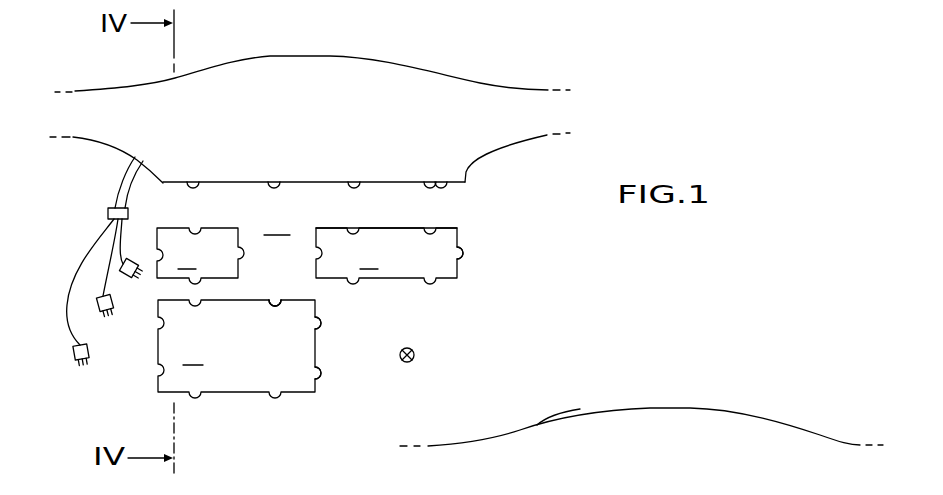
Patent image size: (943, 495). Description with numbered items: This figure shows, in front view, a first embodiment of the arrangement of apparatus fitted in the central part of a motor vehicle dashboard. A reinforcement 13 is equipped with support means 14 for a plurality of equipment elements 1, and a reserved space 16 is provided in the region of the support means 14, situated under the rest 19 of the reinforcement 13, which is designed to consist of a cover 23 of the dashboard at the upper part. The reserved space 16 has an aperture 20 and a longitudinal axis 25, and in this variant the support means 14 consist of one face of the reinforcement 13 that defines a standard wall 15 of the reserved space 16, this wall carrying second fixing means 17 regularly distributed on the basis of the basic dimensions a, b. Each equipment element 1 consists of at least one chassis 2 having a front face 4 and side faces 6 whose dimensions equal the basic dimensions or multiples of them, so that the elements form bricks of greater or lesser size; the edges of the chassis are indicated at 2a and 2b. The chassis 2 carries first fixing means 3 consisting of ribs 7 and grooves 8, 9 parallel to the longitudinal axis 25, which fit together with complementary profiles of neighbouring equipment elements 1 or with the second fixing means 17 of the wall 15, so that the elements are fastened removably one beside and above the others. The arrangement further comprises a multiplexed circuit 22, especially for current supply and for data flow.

The equipment element 1 is at (355, 320).
The chassis 2 is at (458, 262).
The module side coupling edge 2a is at (332, 348).
The module upper coupling edge 2b is at (383, 318).
The first fixing means 3 is at (477, 252).
The front face 4 is at (278, 306).
The side face 6 is at (158, 340).
The rib 7 is at (446, 182).
The groove 8 is at (273, 306).
The coupling recess 9 is at (269, 333).
The reinforcement 13 is at (445, 100).
The support means 14 is at (447, 212).
The standard wall 15 is at (314, 289).
The reserved space 16 is at (310, 215).
The second fixing means 17 is at (372, 180).
The rest of the reinforcement 19 is at (683, 436).
The aperture 20 is at (277, 224).
The multiplexed circuit 22 is at (259, 262).
The cover 23 is at (553, 442).
The longitudinal axis 25 is at (415, 352).